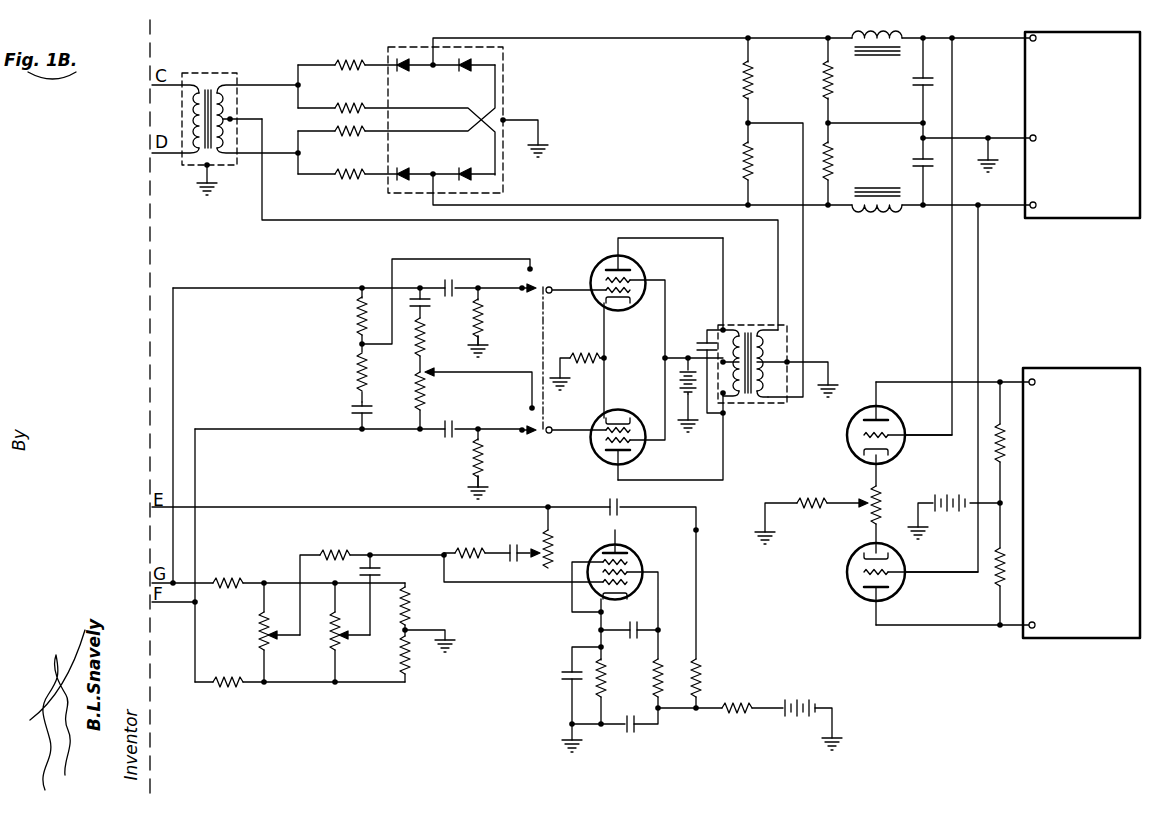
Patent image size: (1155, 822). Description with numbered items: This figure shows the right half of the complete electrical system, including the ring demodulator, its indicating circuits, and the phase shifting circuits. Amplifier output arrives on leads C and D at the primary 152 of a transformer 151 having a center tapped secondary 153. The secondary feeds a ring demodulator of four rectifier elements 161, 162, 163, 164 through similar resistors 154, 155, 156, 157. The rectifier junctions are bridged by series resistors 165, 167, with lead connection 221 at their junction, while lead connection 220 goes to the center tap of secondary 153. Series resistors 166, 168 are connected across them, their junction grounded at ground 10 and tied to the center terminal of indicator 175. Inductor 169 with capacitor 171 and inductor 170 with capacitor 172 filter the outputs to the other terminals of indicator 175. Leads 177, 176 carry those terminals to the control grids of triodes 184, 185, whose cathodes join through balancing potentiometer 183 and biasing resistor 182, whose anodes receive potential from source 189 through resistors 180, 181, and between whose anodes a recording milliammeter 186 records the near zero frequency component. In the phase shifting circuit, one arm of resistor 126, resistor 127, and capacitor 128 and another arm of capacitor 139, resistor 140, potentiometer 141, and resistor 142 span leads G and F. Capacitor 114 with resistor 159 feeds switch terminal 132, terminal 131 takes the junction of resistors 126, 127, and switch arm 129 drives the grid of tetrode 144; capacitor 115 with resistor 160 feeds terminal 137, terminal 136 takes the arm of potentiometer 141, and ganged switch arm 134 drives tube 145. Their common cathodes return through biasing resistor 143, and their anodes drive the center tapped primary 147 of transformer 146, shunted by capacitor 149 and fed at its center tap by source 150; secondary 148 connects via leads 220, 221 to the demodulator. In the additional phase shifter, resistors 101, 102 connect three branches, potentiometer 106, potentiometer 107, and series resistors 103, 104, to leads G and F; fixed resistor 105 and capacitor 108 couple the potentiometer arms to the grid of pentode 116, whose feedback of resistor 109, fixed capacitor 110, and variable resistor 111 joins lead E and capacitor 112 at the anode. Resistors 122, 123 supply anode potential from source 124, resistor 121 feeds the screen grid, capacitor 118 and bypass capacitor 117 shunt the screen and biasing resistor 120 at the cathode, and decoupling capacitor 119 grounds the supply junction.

The ground 10 is at (200, 198).
The resistor 101 is at (235, 578).
The resistor 102 is at (232, 678).
The resistor 103 is at (412, 600).
The resistor 104 is at (400, 650).
The fixed resistor 105 is at (332, 550).
The potentiometer 106 is at (260, 627).
The potentiometer 107 is at (333, 630).
The capacitor 108 is at (380, 570).
The resistor 109 is at (470, 548).
The fixed capacitor 110 is at (517, 546).
The variable resistor 111 is at (553, 554).
The capacitor 112 is at (620, 503).
The capacitor 114 is at (455, 284).
The capacitor 115 is at (455, 427).
The electron discharge tube 116 is at (640, 565).
The bypass capacitor 117 is at (562, 680).
The capacitor 118 is at (637, 625).
The decoupling capacitor 119 is at (635, 730).
The biasing resistor 120 is at (605, 678).
The resistor 121 is at (653, 667).
The resistor 122 is at (700, 670).
The resistor 123 is at (738, 705).
The source of anode potential 124 is at (815, 704).
The resistor 126 is at (358, 320).
The resistor 127 is at (358, 370).
The capacitor 128 is at (370, 410).
The switch arm 129 is at (550, 286).
The switch terminal 131 is at (534, 268).
The switch terminal 132 is at (526, 292).
The switch arm 134 is at (548, 433).
The switch terminal 136 is at (530, 406).
The switch terminal 137 is at (522, 433).
The capacitor 139 is at (425, 306).
The resistor 140 is at (425, 333).
The potentiometer 141 is at (416, 372).
The resistor 142 is at (427, 397).
The biasing resistor 143 is at (586, 356).
The electron discharge tube 144 is at (640, 268).
The electron discharge tube 145 is at (640, 455).
The transformer 146 is at (751, 319).
The center tapped primary 147 is at (732, 398).
The secondary 148 is at (769, 390).
The capacitor 149 is at (700, 347).
The source of potential 150 is at (682, 389).
The transformer 151 is at (212, 82).
The primary 152 is at (192, 128).
The center tapped secondary 153 is at (232, 112).
The resistor 154 is at (340, 60).
The resistor 155 is at (340, 103).
The resistor 156 is at (340, 128).
The resistor 157 is at (340, 170).
The resistor 159 is at (483, 318).
The resistor 160 is at (478, 460).
The rectifier element 161 is at (408, 70).
The rectifier element 162 is at (470, 70).
The rectifier element 163 is at (405, 173).
The rectifier element 164 is at (456, 164).
The resistor 165 is at (744, 70).
The resistor 166 is at (825, 70).
The resistor 167 is at (745, 172).
The resistor 168 is at (832, 147).
The inductor 169 is at (898, 50).
The inductor 170 is at (898, 202).
The capacitor 171 is at (904, 87).
The capacitor 172 is at (913, 160).
The indicator 175 is at (1100, 137).
The lead 176 is at (979, 270).
The lead 177 is at (950, 270).
The resistor 180 is at (995, 448).
The resistor 181 is at (998, 592).
The biasing resistor 182 is at (818, 507).
The balancing potentiometer 183 is at (868, 502).
The electron discharge tube 184 is at (898, 413).
The electron discharge tube 185 is at (895, 590).
The recording milliammeter 186 is at (1096, 516).
The source of potential 189 is at (948, 493).
The lead connection 220 is at (346, 222).
The lead connection 221 is at (803, 258).